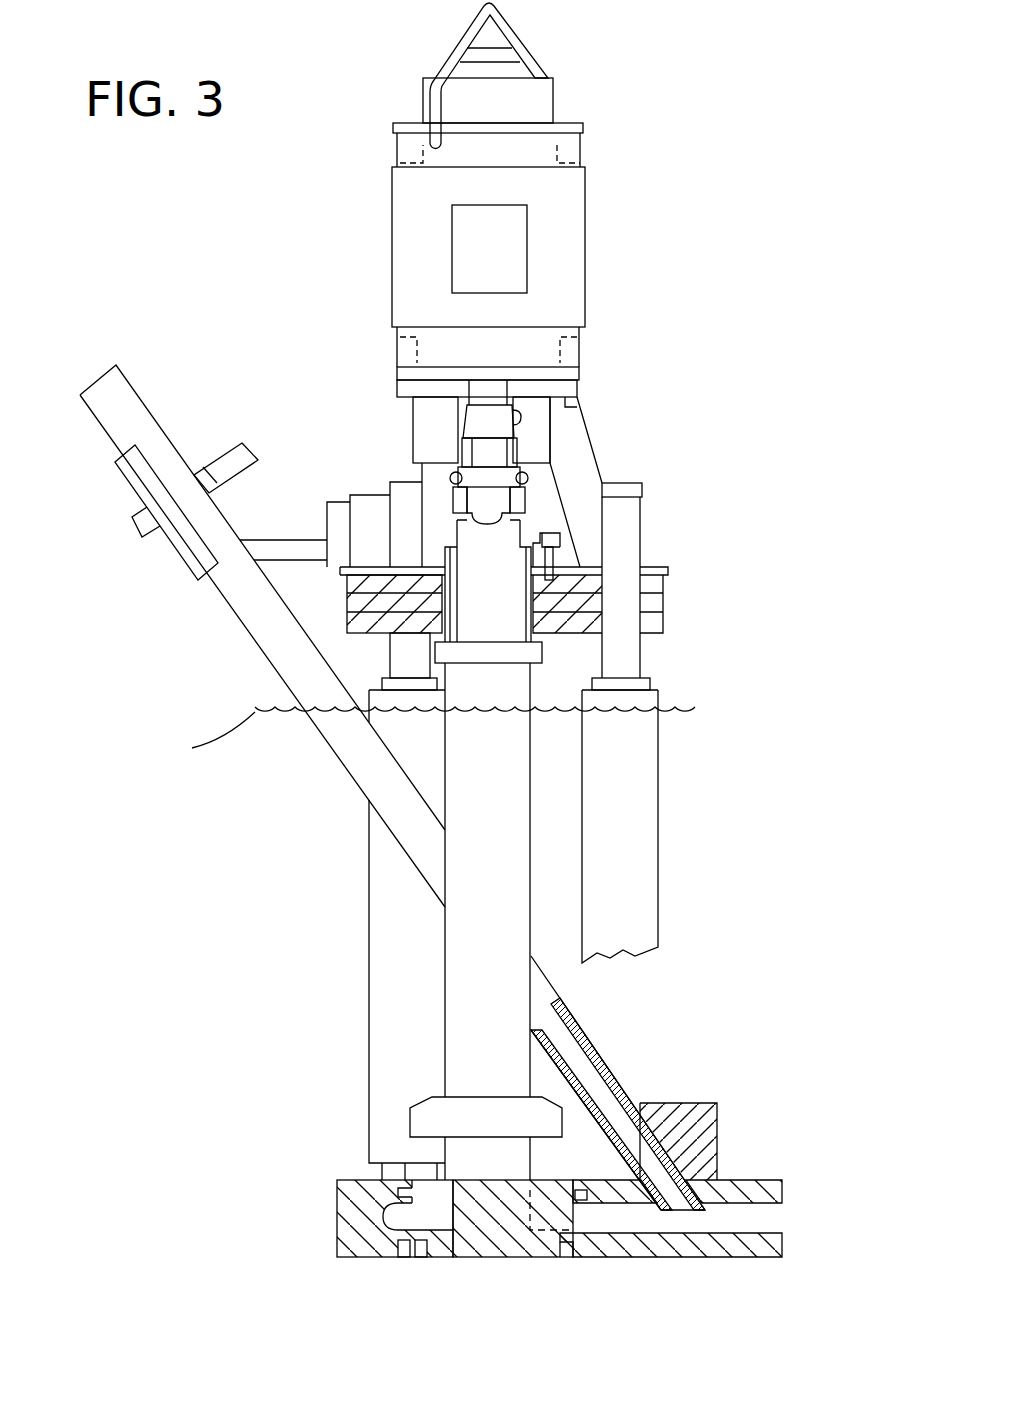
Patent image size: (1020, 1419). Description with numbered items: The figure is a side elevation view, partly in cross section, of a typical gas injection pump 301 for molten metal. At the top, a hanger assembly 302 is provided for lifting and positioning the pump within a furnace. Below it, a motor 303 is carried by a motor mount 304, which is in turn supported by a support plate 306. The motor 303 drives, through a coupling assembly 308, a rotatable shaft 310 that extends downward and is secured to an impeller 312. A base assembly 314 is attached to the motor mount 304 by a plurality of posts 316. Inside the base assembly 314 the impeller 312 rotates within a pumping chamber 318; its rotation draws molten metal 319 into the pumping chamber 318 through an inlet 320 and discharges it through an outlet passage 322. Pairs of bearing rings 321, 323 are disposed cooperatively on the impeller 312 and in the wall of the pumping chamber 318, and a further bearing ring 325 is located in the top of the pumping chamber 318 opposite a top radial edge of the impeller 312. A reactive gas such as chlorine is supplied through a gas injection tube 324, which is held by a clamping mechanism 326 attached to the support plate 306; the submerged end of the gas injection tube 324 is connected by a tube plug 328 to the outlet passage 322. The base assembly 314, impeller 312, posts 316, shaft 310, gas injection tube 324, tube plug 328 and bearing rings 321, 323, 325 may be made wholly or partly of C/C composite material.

The gas injection pump 301 is at (438, 672).
The hanger assembly 302 is at (517, 42).
The motor 303 is at (510, 262).
The motor mount 304 is at (573, 448).
The support plate 306 is at (665, 572).
The coupling assembly 308 is at (457, 455).
The rotatable shaft 310 is at (505, 838).
The impeller 312 is at (500, 1240).
The base assembly 314 is at (507, 1221).
The posts 316 is at (640, 890).
The pumping chamber 318 is at (395, 1218).
The molten metal 319 is at (579, 778).
The inlet 320 is at (567, 1180).
The bearing ring pair 321 is at (404, 1255).
The outlet passage 322 is at (650, 1223).
The bearing ring pair 323 is at (421, 1255).
The gas injection tube 324 is at (255, 620).
The bearing ring 325 is at (403, 1188).
The clamping mechanism 326 is at (140, 475).
The tube plug 328 is at (710, 1135).